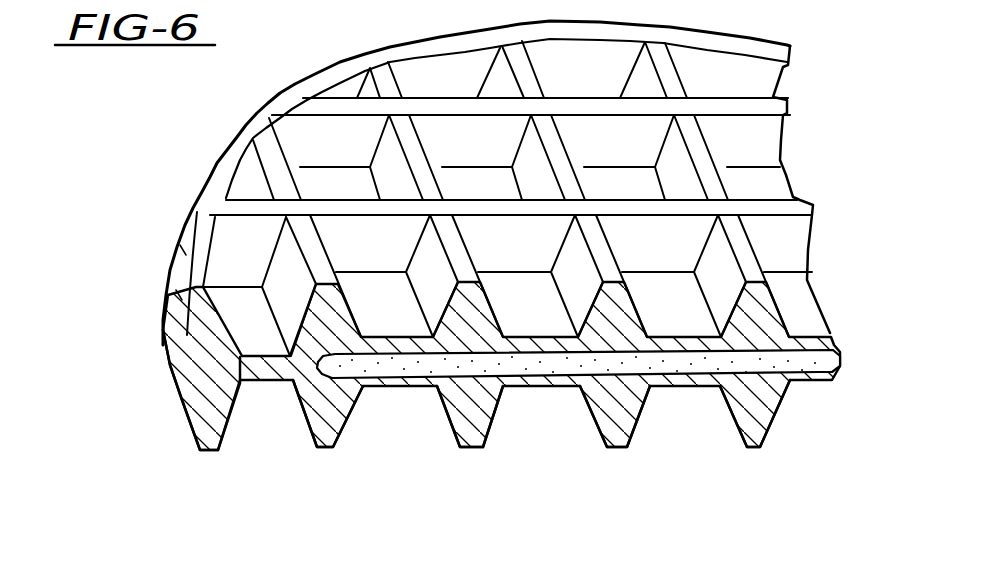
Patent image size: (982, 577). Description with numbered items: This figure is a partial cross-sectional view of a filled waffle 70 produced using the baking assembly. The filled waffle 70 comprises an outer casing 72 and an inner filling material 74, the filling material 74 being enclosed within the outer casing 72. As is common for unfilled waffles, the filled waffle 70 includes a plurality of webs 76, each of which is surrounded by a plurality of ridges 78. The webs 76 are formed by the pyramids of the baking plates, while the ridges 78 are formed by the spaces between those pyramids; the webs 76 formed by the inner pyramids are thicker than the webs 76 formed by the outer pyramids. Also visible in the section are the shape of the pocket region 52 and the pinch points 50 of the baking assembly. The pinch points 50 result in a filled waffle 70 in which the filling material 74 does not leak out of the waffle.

The filled waffle 70 is at (186, 151).
The webs 76 is at (383, 293).
The outer casing 72 is at (190, 383).
The pinch points 50 is at (258, 370).
The ridges 78 is at (462, 448).
The filling material 74 is at (540, 363).
The pocket region 52 is at (835, 342).